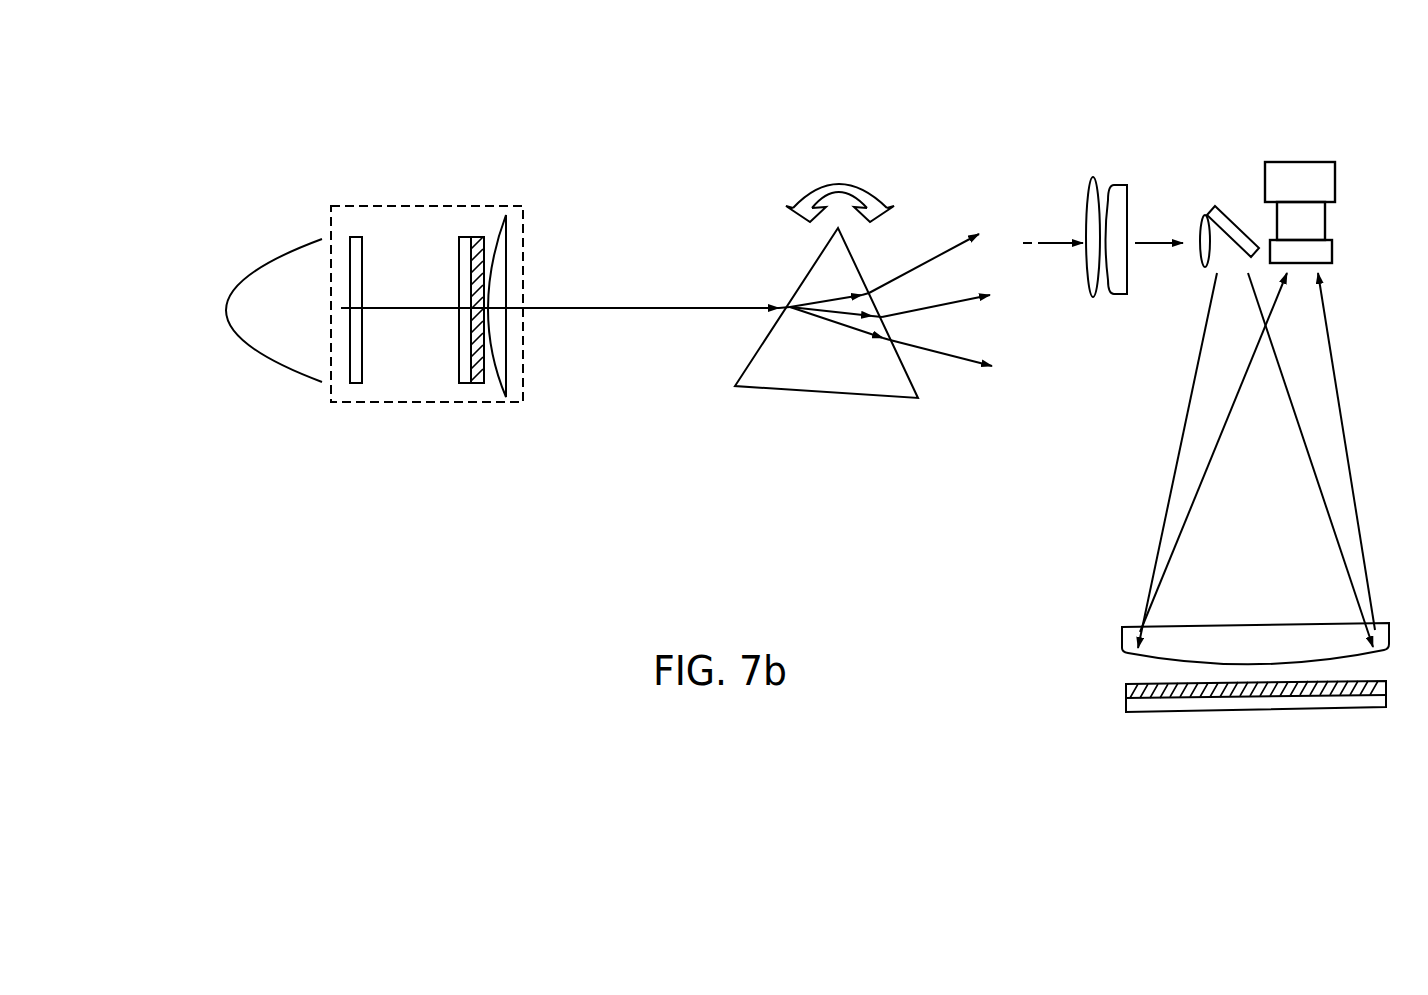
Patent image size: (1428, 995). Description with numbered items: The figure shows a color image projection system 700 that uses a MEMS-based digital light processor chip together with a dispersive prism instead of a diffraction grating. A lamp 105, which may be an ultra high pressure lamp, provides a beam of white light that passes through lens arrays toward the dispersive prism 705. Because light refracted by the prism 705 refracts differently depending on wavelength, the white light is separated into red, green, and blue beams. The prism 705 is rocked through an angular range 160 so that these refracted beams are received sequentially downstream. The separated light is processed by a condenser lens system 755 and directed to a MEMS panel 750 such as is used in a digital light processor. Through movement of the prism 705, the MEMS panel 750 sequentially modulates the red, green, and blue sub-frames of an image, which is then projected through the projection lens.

The color image projection system 700 is at (716, 49).
The lamp 105 is at (230, 334).
The angular range 160 is at (866, 185).
The dispersive prism 705 is at (855, 397).
The condenser lens system 755 is at (1240, 166).
The MEMS panel 750 is at (1117, 696).